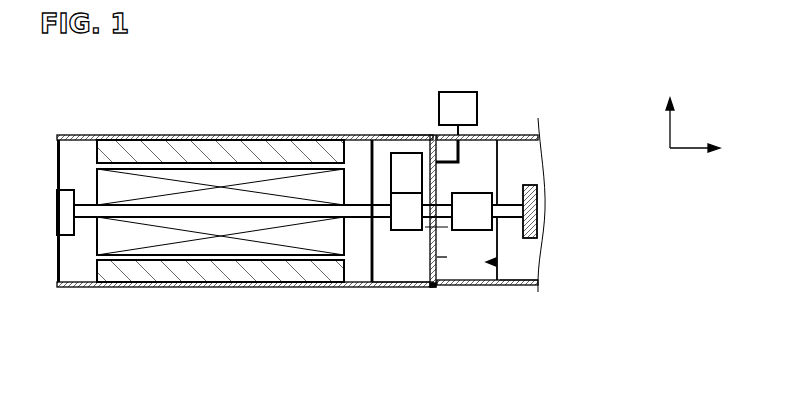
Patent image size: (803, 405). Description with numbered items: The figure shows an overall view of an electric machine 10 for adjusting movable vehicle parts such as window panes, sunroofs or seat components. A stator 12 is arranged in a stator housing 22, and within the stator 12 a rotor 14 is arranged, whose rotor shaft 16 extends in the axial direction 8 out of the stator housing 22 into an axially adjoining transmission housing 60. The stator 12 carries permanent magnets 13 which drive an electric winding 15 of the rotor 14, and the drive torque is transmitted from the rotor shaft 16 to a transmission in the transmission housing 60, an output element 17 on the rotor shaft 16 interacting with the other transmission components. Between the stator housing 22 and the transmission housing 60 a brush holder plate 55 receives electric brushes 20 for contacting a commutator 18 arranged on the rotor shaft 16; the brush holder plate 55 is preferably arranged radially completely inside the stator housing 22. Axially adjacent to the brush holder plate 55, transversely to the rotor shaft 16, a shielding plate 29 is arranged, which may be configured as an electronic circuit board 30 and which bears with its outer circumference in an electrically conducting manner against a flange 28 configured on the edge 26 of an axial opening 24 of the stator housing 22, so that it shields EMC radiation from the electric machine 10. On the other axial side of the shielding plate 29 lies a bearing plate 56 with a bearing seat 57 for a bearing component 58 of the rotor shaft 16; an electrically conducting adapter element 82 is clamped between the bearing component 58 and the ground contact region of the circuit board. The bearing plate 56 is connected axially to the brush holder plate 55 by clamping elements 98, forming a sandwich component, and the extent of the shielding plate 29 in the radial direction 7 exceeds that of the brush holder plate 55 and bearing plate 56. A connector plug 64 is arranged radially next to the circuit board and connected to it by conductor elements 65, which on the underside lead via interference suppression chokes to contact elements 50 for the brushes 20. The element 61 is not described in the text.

The electric machine 10 is at (91, 139).
The permanent magnets 13 is at (133, 150).
The stator housing 22 is at (178, 136).
The stator 12 is at (228, 150).
The rotor shaft 16 is at (280, 208).
The electric brushes 20 is at (392, 136).
The axial opening 24 is at (412, 152).
The contact elements 50 is at (436, 191).
The connector plug 64 is at (455, 100).
The conductor elements 65 is at (462, 160).
The adapter element 82 is at (480, 200).
The bearing seat 57 is at (500, 168).
The bearing component 58 is at (492, 193).
The output element 17 is at (537, 200).
The clamping elements 98 is at (437, 228).
The bearing plate 56 is at (497, 262).
The transmission housing 60 is at (538, 285).
The electric winding 15 is at (225, 243).
The rotor 14 is at (273, 247).
The commutator 18 is at (372, 258).
The brush holder plate 55 is at (387, 270).
The flange 28 is at (432, 287).
The edge 26 is at (425, 252).
The wall end 61 is at (438, 285).
The electronic circuit board 30 is at (438, 257).
The shielding plate 29 is at (479, 313).
The radial direction 7 is at (670, 128).
The axial direction 8 is at (684, 148).